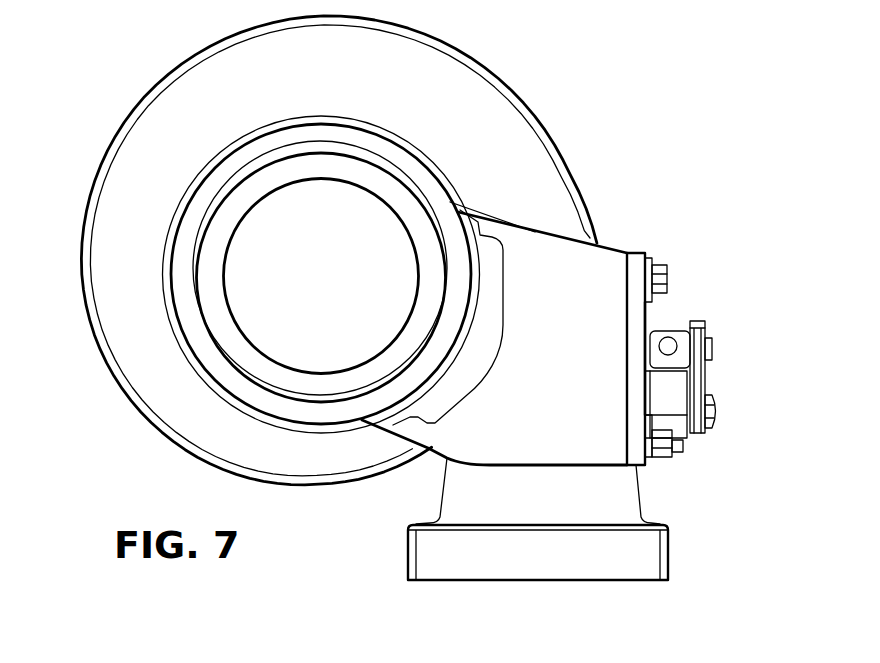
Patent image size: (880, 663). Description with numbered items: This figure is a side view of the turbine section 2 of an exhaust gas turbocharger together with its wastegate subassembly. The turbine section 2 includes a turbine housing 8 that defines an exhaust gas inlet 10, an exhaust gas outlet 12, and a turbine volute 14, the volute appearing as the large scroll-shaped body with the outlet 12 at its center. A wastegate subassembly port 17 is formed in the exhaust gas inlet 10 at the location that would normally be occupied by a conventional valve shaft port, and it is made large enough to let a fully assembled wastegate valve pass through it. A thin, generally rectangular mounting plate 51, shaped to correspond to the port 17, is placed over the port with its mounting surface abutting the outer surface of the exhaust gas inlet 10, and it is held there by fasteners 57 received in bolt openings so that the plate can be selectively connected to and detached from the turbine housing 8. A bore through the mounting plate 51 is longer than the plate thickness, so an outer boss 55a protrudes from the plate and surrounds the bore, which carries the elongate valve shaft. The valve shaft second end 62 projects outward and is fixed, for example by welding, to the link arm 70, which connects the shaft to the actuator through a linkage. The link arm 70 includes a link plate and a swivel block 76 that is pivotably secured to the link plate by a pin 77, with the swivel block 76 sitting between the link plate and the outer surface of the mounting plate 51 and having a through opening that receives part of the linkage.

The turbine section 2 is at (86, 114).
The turbine housing 8 is at (440, 70).
The turbine volute 14 is at (222, 66).
The exhaust gas outlet 12 is at (200, 353).
The wastegate subassembly port 17 is at (637, 253).
The mounting plate 51 is at (642, 312).
The fasteners 57 is at (660, 272).
The swivel block 76 is at (677, 330).
The pin 77 is at (715, 353).
The link arm 70 is at (698, 390).
The valve shaft second end 62 is at (715, 417).
The outer boss 55a is at (683, 447).
The exhaust gas inlet 10 is at (486, 500).